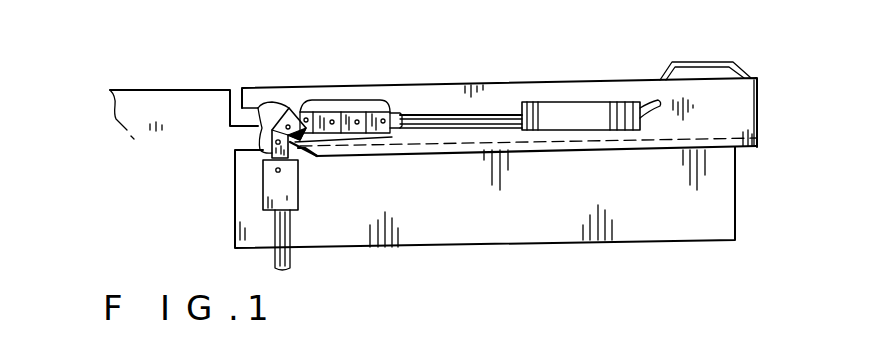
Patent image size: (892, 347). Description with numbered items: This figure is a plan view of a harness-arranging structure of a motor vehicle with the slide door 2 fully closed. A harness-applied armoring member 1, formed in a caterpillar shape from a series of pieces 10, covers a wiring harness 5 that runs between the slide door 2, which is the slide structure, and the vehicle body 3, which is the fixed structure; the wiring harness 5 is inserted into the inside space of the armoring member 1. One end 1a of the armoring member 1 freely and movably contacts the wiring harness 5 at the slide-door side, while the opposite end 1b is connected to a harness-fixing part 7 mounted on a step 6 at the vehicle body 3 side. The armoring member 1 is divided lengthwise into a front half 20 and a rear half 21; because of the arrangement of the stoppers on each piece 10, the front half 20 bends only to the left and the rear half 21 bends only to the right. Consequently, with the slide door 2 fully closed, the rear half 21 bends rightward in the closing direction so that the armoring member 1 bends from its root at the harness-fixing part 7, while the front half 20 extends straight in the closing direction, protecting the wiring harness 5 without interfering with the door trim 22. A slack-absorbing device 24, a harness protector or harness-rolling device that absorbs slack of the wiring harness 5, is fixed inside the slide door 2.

The harness-applied armoring member 1 is at (309, 98).
The one end 1a is at (407, 110).
The opposite end 1b is at (265, 173).
The slide door 2 is at (502, 82).
The vehicle body 3 is at (172, 88).
The wiring harness 5 is at (446, 113).
The step 6 is at (415, 244).
The harness-fixing part 7 is at (300, 190).
The piece 10 is at (377, 133).
The front half 20 is at (348, 98).
The rear half 21 is at (266, 116).
The door trim 22 is at (360, 157).
The slack-absorbing device 24 is at (583, 100).